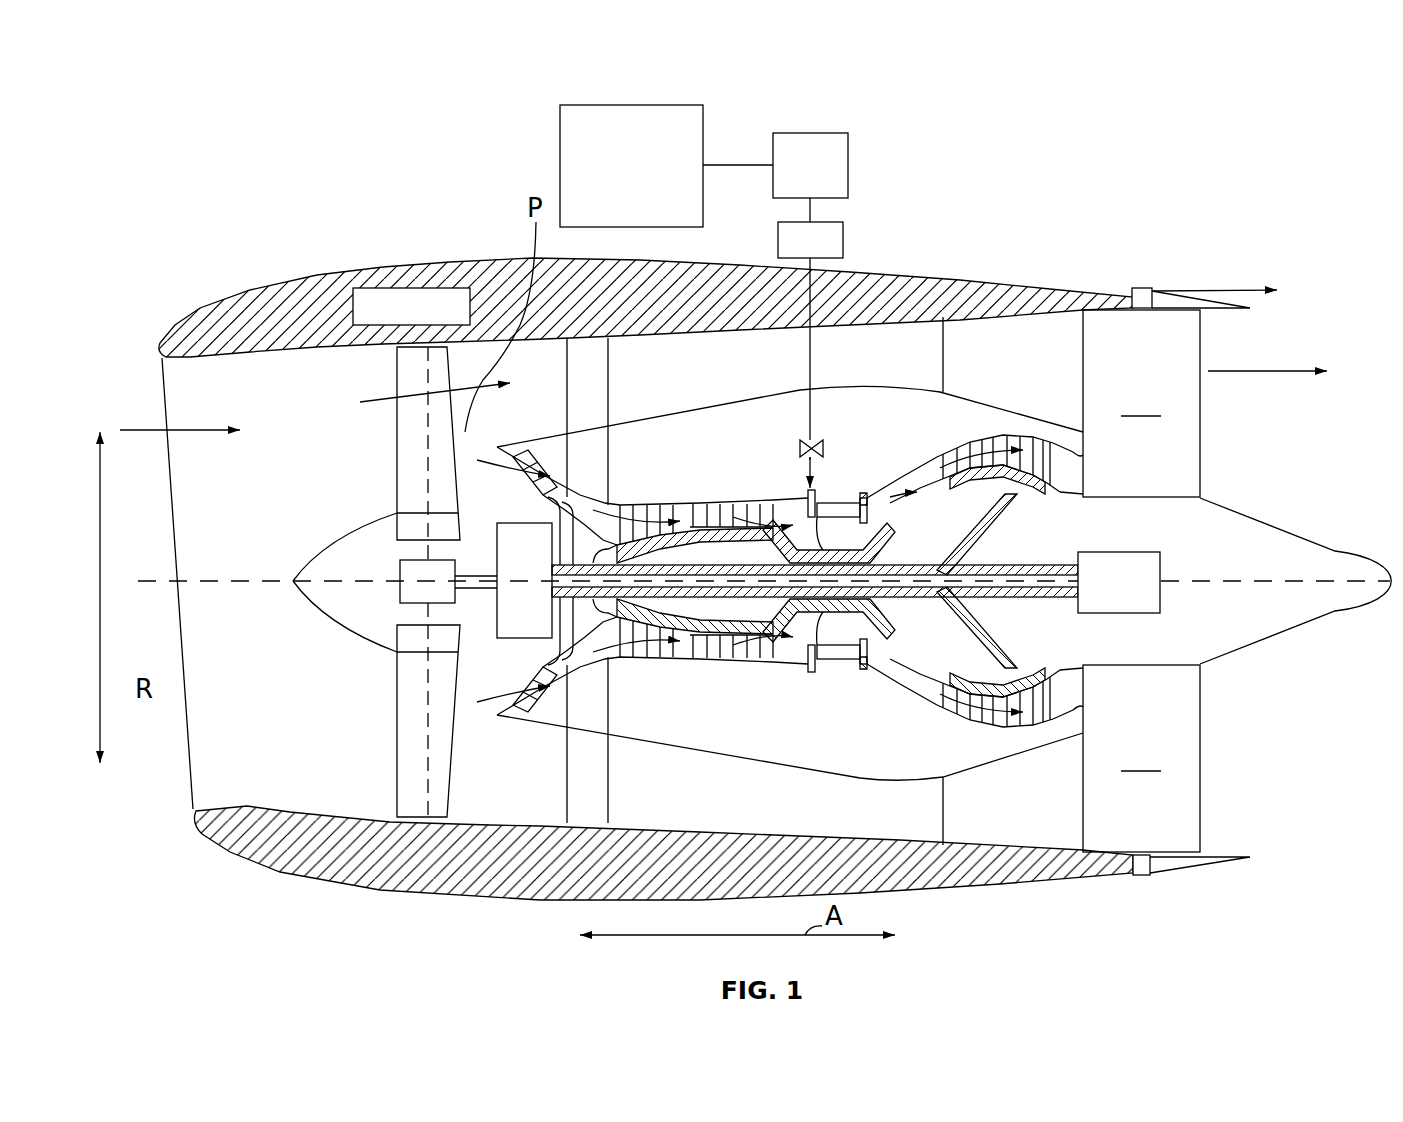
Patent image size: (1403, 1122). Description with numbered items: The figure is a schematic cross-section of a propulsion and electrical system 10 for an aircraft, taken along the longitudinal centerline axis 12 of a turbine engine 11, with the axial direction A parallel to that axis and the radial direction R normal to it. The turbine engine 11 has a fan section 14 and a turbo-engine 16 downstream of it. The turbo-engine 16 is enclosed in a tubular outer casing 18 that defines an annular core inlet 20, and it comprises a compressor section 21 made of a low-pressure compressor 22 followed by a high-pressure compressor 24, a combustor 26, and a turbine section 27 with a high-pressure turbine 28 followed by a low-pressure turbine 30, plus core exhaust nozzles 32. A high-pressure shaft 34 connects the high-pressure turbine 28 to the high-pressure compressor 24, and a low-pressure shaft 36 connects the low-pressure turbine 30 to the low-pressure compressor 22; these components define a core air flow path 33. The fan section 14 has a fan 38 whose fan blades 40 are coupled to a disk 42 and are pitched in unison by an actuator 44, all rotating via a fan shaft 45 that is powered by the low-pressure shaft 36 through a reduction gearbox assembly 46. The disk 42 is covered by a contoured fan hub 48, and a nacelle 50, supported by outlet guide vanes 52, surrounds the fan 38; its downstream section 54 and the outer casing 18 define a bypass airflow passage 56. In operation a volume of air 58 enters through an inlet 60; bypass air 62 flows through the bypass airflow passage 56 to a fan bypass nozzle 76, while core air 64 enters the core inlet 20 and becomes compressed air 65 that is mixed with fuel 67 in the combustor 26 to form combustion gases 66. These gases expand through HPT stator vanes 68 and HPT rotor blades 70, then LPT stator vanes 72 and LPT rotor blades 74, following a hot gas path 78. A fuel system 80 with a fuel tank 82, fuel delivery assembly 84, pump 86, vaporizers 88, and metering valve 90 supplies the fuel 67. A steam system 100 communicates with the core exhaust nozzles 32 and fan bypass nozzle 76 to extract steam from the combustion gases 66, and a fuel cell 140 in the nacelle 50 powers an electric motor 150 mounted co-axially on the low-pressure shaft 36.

The propulsion and electrical system 10 is at (275, 208).
The turbine engine 11 is at (278, 275).
The longitudinal centerline axis 12 is at (1190, 580).
The fan section 14 is at (368, 367).
The turbo-engine 16 is at (818, 420).
The outer casing 18 is at (780, 763).
The core inlet 20 is at (497, 716).
The compressor section 21 is at (690, 442).
The low-pressure compressor 22 is at (547, 655).
The high-pressure compressor 24 is at (637, 648).
The combustor 26 is at (830, 658).
The turbine section 27 is at (920, 430).
The high-pressure turbine 28 is at (908, 660).
The low-pressure turbine 30 is at (1027, 735).
The core exhaust nozzles 32 is at (1140, 288).
The core air flow path 33 is at (603, 655).
The high-pressure shaft 34 is at (808, 498).
The low-pressure shaft 36 is at (993, 523).
The fan 38 is at (287, 705).
The fan blades 40 is at (397, 720).
The disk 42 is at (410, 523).
The actuator 44 is at (400, 590).
The fan shaft 45 is at (510, 527).
The gearbox assembly 46 is at (517, 464).
The fan hub 48 is at (325, 617).
The nacelle 50 is at (413, 893).
The outlet guide vanes 52 is at (612, 402).
The downstream section of the nacelle 54 is at (975, 285).
The bypass airflow passage 56 is at (724, 368).
The volume of air 58 is at (215, 432).
The inlet 60 is at (178, 752).
The bypass air 62 is at (370, 403).
The core air 64 is at (497, 446).
The compressed air 65 is at (673, 507).
The combustion gases 66 is at (1232, 288).
The fuel 67 is at (818, 487).
The HPT stator vanes 68 is at (867, 660).
The HPT rotor blades 70 is at (900, 658).
The LPT stator vanes 72 is at (948, 698).
The LPT rotor blades 74 is at (960, 698).
The fan bypass nozzle 76 is at (1220, 413).
The hot gas path 78 is at (932, 481).
The fuel system 80 is at (547, 110).
The fuel tank 82 is at (560, 165).
The fuel delivery assembly 84 is at (812, 370).
The pump 86 is at (848, 166).
The vaporizers 88 is at (843, 240).
The metering valve 90 is at (800, 395).
The steam system 100 is at (1141, 581).
The fuel cell 140 is at (395, 287).
The electric motor 150 is at (1118, 552).